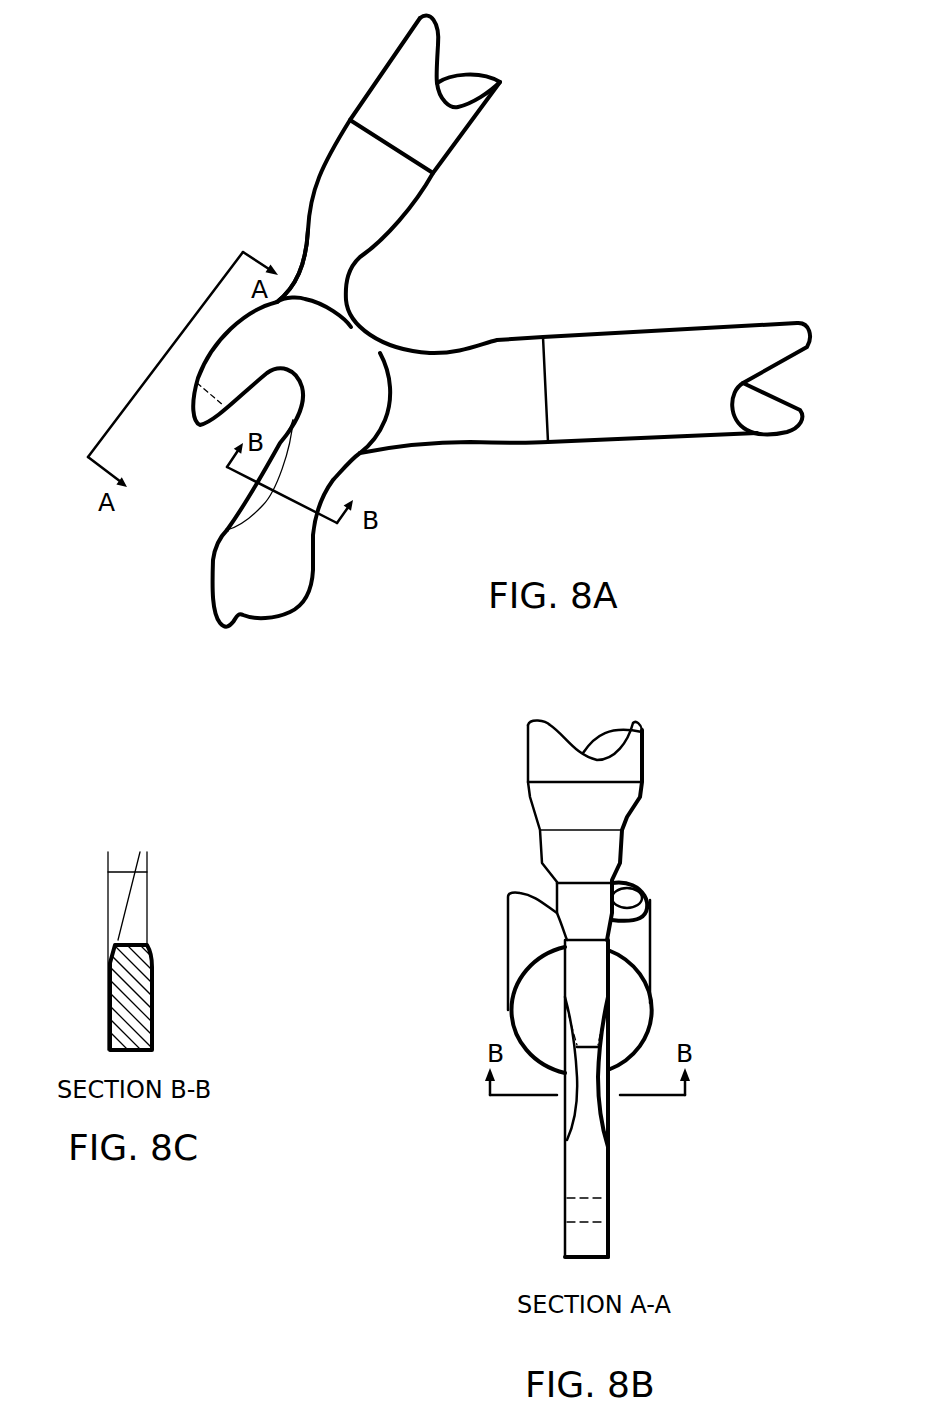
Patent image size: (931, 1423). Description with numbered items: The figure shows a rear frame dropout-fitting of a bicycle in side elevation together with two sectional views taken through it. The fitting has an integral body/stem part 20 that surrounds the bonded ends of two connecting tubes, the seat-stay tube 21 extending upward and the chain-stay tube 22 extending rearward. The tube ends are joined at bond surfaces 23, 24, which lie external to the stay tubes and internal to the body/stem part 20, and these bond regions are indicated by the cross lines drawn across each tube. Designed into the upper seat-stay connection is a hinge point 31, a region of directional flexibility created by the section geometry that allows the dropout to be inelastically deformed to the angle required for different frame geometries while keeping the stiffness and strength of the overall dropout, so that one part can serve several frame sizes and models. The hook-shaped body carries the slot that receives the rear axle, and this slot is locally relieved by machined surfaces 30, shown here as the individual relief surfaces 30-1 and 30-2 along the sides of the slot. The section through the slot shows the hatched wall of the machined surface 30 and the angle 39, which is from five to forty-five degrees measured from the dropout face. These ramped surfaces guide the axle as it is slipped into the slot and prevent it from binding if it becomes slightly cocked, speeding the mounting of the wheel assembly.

In FIG. 8A, the body/stem part 20 is at (347, 345).
In FIG. 8A, the seat-stay tube 21 is at (383, 77).
In FIG. 8B, the seat-stay tube 21 is at (635, 743).
In FIG. 8A, the chain-stay tube 22 is at (677, 342).
In FIG. 8B, the chain-stay tube 22 is at (652, 930).
In FIG. 8A, the bond surface 23 is at (413, 197).
In FIG. 8A, the bond surface 24 is at (503, 345).
In FIG. 8C, the machined surfaces 30 is at (147, 947).
In FIG. 8A, the machined relief surface 30-1 is at (203, 408).
In FIG. 8B, the machined relief surface 30-1 is at (565, 1045).
In FIG. 8A, the machined relief surface 30-2 is at (243, 502).
In FIG. 8B, the machined relief surface 30-2 is at (613, 1112).
In FIG. 8A, the hinge point 31 is at (307, 248).
In FIG. 8C, the angle of ramped surface 39 is at (137, 883).